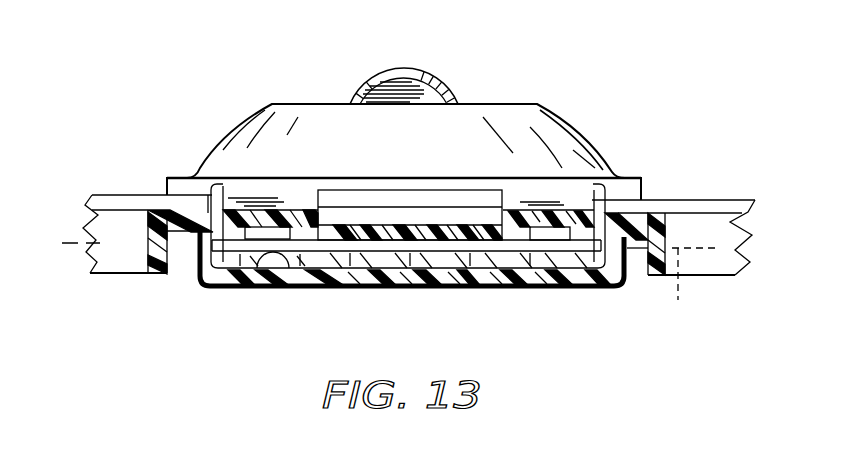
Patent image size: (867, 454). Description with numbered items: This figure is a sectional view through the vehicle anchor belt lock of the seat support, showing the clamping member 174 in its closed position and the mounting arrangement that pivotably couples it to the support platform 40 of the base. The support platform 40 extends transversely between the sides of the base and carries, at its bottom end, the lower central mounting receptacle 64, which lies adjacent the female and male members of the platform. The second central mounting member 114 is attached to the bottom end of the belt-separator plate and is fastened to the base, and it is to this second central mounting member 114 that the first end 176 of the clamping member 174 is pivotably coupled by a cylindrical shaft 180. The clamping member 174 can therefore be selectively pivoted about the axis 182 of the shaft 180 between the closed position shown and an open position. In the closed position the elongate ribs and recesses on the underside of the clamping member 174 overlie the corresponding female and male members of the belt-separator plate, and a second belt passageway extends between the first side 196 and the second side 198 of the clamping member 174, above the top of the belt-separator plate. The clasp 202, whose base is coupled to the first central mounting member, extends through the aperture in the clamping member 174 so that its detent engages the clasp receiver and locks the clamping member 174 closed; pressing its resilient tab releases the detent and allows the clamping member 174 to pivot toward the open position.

The support platform 40 is at (237, 272).
The lower central mounting receptacle 64 is at (285, 272).
The second central mounting member 114 is at (447, 230).
The clamping member 174 is at (560, 107).
The first end 176 is at (296, 211).
The cylindrical shaft 180 is at (557, 245).
The axis 182 is at (678, 300).
The first side 196 is at (183, 177).
The second side 198 is at (641, 170).
The clasp 202 is at (422, 75).